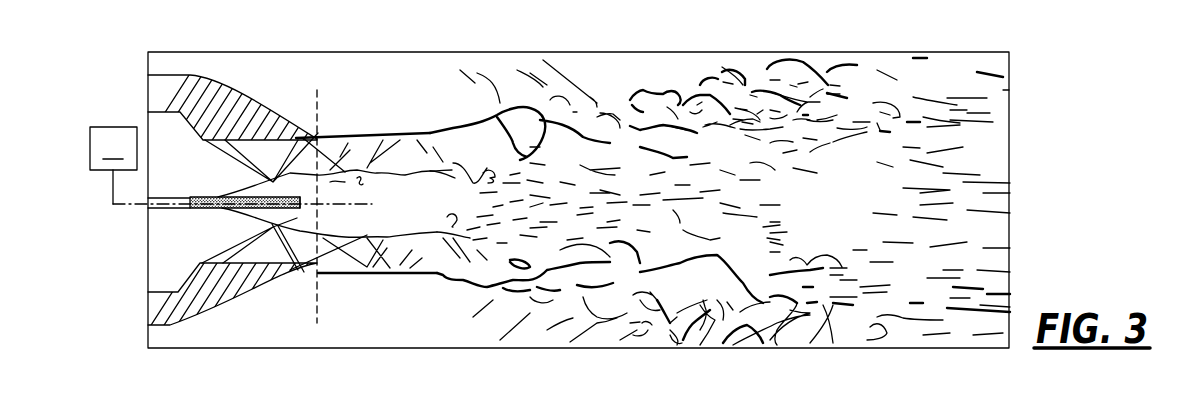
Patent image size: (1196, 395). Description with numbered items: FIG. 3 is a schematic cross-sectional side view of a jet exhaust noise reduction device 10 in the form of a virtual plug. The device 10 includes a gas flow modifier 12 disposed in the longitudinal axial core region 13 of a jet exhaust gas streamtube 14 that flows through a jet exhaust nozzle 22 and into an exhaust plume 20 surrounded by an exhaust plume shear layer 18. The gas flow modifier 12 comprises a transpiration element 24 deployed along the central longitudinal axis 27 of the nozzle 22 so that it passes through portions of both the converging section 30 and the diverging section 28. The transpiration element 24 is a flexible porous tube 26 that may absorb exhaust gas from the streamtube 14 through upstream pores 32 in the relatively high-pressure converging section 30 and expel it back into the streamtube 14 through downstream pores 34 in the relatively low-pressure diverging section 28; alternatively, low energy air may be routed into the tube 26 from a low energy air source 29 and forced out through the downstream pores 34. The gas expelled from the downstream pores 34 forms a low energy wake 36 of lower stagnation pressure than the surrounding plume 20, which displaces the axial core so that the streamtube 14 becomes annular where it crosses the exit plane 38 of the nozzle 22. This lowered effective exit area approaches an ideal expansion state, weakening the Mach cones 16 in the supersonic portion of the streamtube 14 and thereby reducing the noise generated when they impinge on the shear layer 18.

The jet exhaust noise reduction device 10 is at (150, 210).
The gas flow modifier 12 is at (253, 117).
The longitudinal axial core region 13 is at (253, 219).
The jet exhaust gas streamtube 14 is at (265, 248).
The Mach cones 16 is at (327, 238).
The exhaust plume shear layer 18 is at (398, 275).
The exhaust plume 20 is at (428, 253).
The jet exhaust nozzle 22 is at (212, 112).
The transpiration element 24 is at (209, 187).
The flexible porous tube 26 is at (278, 197).
The central longitudinal axis 27 is at (350, 200).
The diverging section 28 is at (218, 144).
The low energy air source 29 is at (113, 165).
The converging section 30 is at (200, 138).
The upstream pores 32 is at (197, 210).
The downstream pores 34 is at (292, 208).
The low energy wake 36 is at (382, 203).
The exit plane 38 is at (320, 90).